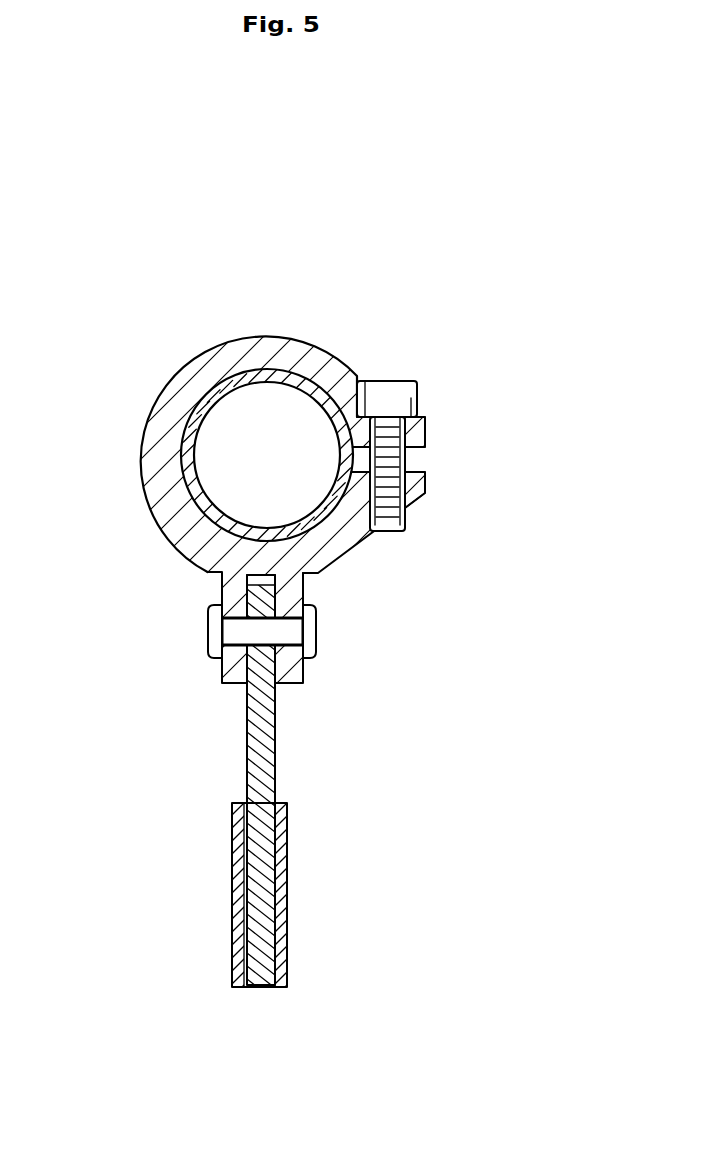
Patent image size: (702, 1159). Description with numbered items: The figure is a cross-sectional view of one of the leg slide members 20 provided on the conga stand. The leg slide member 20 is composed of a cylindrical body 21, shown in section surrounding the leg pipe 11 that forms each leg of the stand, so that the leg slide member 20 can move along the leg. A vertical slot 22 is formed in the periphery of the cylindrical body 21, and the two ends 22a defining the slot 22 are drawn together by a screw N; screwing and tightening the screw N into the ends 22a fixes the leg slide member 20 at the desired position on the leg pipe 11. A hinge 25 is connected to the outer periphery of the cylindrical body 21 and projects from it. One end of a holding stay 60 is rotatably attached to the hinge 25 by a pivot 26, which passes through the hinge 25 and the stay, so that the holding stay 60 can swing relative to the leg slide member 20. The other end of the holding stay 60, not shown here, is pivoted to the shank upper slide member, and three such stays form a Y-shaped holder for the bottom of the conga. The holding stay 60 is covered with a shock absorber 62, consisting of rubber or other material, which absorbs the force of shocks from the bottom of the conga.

The leg slide member 20 is at (351, 501).
The cylindrical body 21 is at (222, 362).
The vertical slot 22 is at (438, 481).
The ends 22a is at (427, 426).
The screw N is at (403, 398).
The leg pipe 11 is at (197, 503).
The hinge 25 is at (300, 683).
The pivot 26 is at (290, 632).
The holding stay 60 is at (250, 745).
The shock absorber 62 is at (233, 873).